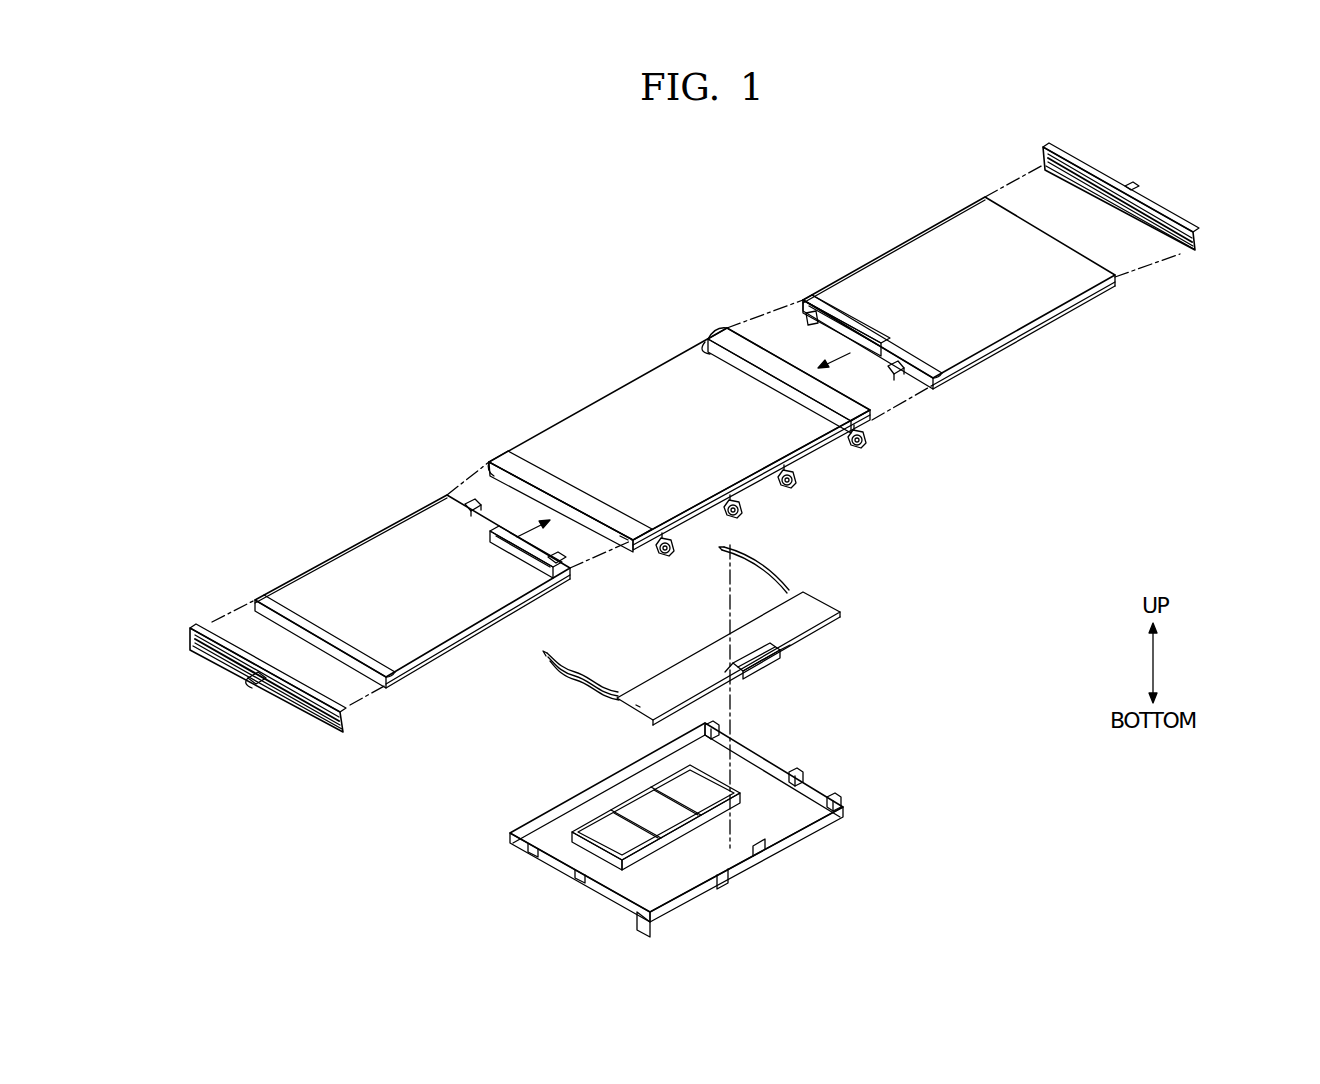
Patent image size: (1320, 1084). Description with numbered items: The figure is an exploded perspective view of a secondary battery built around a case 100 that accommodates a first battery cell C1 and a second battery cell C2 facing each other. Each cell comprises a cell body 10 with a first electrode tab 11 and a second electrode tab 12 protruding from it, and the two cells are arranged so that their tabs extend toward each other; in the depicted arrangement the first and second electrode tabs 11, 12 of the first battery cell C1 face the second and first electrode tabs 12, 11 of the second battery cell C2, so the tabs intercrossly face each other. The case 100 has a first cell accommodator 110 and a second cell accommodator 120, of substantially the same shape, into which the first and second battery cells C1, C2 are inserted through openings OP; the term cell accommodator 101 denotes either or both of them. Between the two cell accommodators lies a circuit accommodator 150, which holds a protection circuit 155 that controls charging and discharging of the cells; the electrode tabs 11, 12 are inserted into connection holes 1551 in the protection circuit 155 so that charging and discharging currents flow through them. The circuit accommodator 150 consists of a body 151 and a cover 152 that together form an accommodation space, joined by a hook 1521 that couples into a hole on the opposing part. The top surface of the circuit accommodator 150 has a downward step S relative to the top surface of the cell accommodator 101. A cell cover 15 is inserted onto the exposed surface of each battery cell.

The case 100 is at (570, 390).
The cell accommodator 101 is at (728, 333).
The first cell accommodator 110 is at (776, 351).
The second cell accommodator 120 is at (555, 472).
The cell body 10 is at (428, 643).
The first electrode tab 11 is at (565, 563).
The second electrode tab 12 is at (465, 507).
The cell cover 15 is at (323, 725).
The circuit accommodator 150 is at (980, 525).
The body 151 is at (780, 438).
The cover 152 is at (750, 773).
The hook 1521 is at (802, 773).
The protection circuit 155 is at (624, 713).
The connection hole 1551 is at (805, 599).
The downward step S is at (718, 345).
The opening OP is at (616, 546).
The first battery cell C1 is at (898, 228).
The second battery cell C2 is at (312, 545).